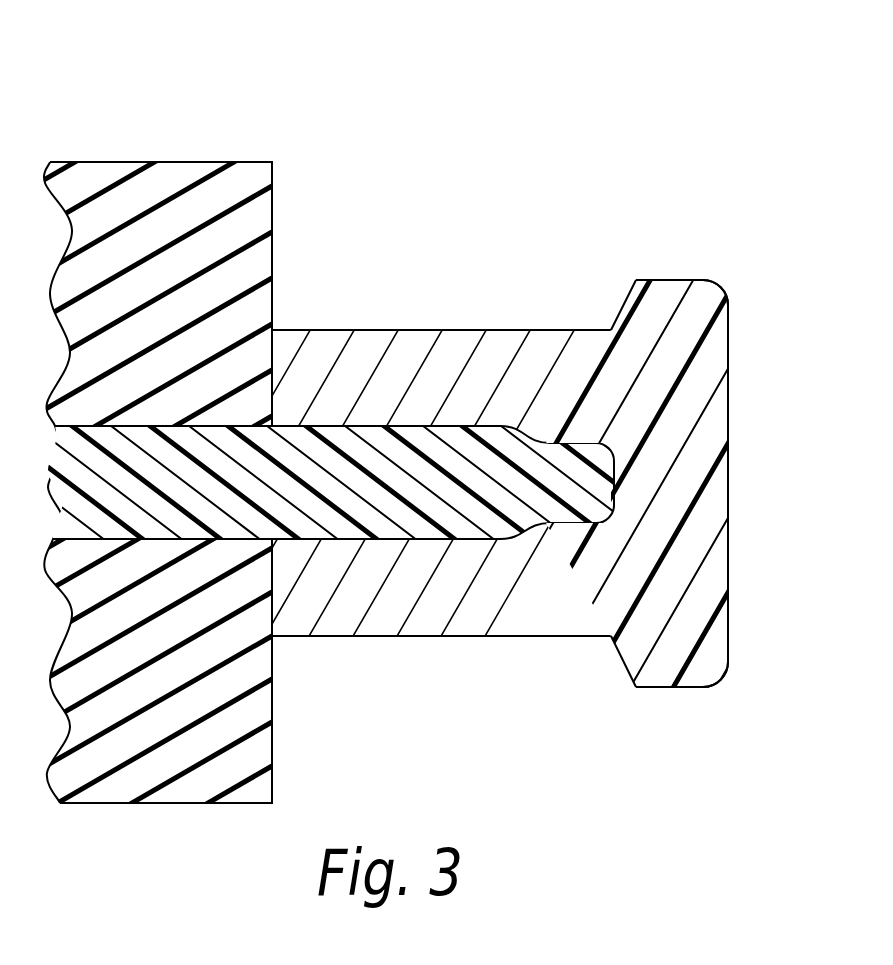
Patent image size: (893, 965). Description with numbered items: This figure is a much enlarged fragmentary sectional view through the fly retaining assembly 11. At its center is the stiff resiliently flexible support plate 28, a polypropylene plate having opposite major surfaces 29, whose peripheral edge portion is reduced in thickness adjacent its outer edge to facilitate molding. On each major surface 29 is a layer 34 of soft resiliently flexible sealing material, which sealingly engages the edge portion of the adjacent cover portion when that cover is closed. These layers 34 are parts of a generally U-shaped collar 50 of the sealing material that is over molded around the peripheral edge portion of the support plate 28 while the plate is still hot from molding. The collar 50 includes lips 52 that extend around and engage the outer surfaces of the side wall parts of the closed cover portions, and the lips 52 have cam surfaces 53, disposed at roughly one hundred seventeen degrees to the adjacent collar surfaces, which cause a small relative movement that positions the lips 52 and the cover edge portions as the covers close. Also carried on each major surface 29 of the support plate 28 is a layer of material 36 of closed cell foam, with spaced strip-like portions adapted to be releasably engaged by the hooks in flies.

The fly retaining assembly 11 is at (442, 85).
The support plate 28 is at (371, 530).
The major surfaces 29 is at (388, 426).
The layer of soft resiliently flexible sealing material 34 is at (528, 330).
The layer of material 36 is at (167, 187).
The U-shaped collar 50 is at (728, 448).
The lips 52 is at (690, 280).
The cam surfaces 53 is at (626, 300).